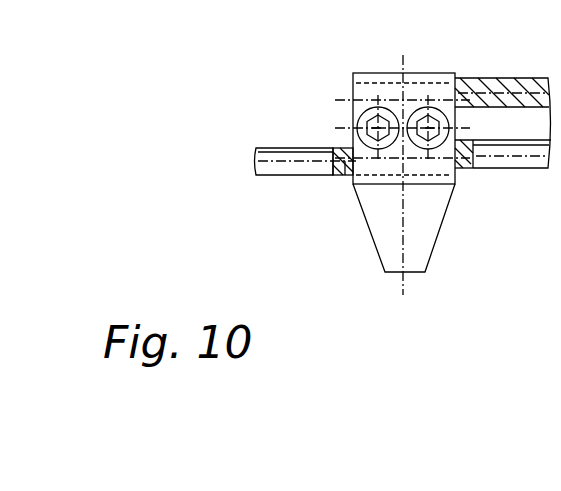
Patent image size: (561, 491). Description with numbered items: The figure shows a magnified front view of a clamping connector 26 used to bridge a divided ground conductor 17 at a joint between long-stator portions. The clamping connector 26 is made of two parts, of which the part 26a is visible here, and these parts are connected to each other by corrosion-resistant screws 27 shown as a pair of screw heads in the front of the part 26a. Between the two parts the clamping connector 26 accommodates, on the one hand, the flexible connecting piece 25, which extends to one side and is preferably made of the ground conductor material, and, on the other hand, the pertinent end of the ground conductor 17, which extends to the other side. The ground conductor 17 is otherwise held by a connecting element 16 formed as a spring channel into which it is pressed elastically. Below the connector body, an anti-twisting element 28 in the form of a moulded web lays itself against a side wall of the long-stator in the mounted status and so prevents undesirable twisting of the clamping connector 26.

The connecting element 16 is at (268, 169).
The ground conductor 17 is at (345, 174).
The connecting piece 25 is at (490, 88).
The clamping connector 26 is at (442, 227).
The part of the clamping connector 26a is at (374, 80).
The corrosion-resistant screws 27 is at (370, 128).
The anti-twisting element 28 is at (375, 202).